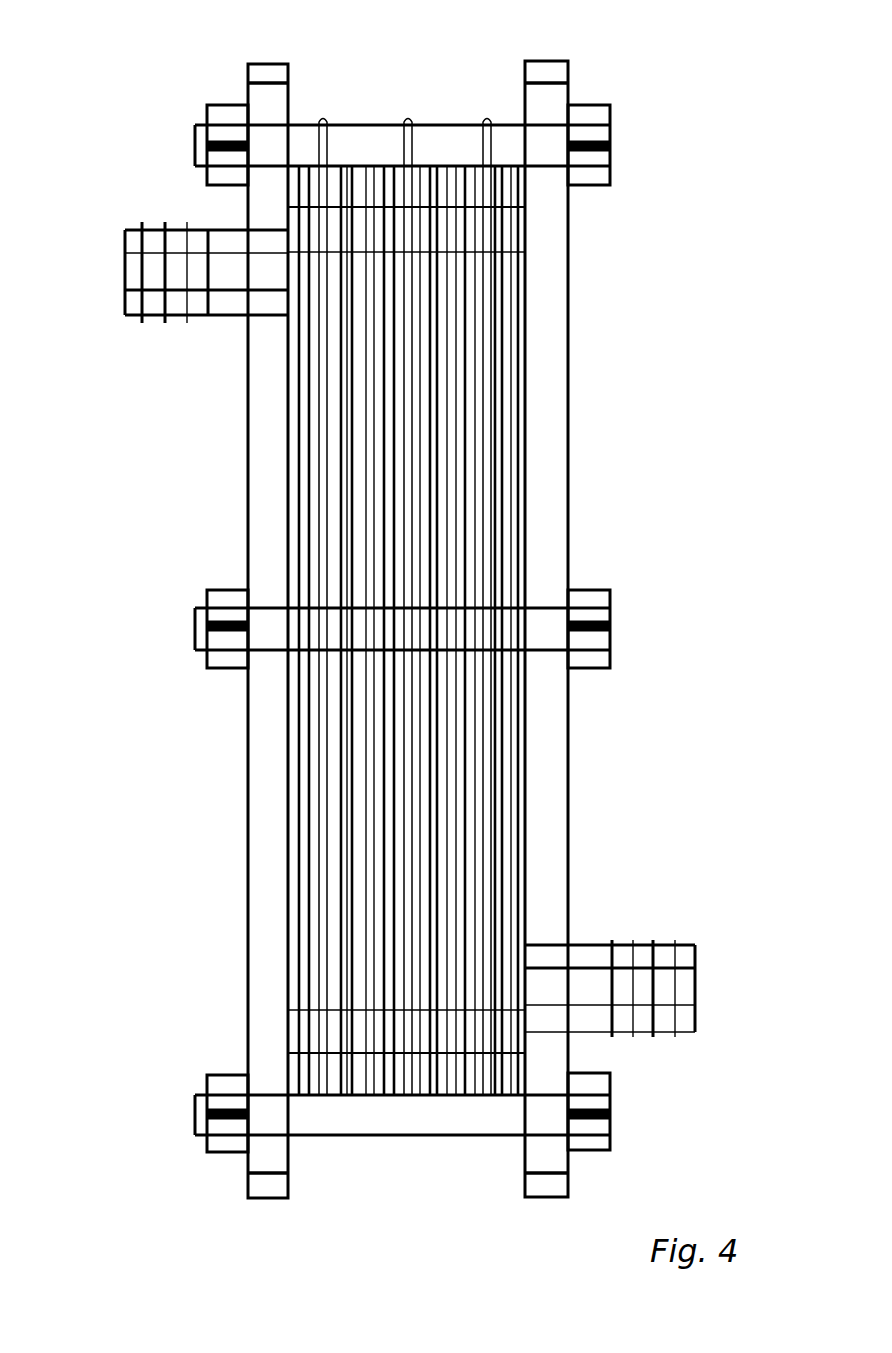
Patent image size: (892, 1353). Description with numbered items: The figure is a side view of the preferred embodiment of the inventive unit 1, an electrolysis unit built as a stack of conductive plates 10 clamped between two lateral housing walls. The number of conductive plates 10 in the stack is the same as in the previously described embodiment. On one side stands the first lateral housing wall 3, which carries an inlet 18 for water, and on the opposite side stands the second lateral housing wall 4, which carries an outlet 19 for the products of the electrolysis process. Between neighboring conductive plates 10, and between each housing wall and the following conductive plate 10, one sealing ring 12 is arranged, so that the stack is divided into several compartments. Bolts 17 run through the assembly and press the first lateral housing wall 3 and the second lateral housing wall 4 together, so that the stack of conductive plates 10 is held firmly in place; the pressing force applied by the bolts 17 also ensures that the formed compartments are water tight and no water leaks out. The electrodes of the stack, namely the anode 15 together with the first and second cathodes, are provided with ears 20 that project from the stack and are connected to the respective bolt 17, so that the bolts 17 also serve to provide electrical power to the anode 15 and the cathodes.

The unit 1 is at (640, 350).
The first lateral housing wall 3 is at (268, 458).
The second lateral housing wall 4 is at (545, 780).
The conductive plate 10 is at (300, 795).
The sealing ring 12 is at (290, 945).
The anode 15 is at (408, 1097).
The bolt 17 is at (597, 117).
The inlet 18 is at (665, 1000).
The outlet 19 is at (138, 262).
The ear 20 is at (323, 117).